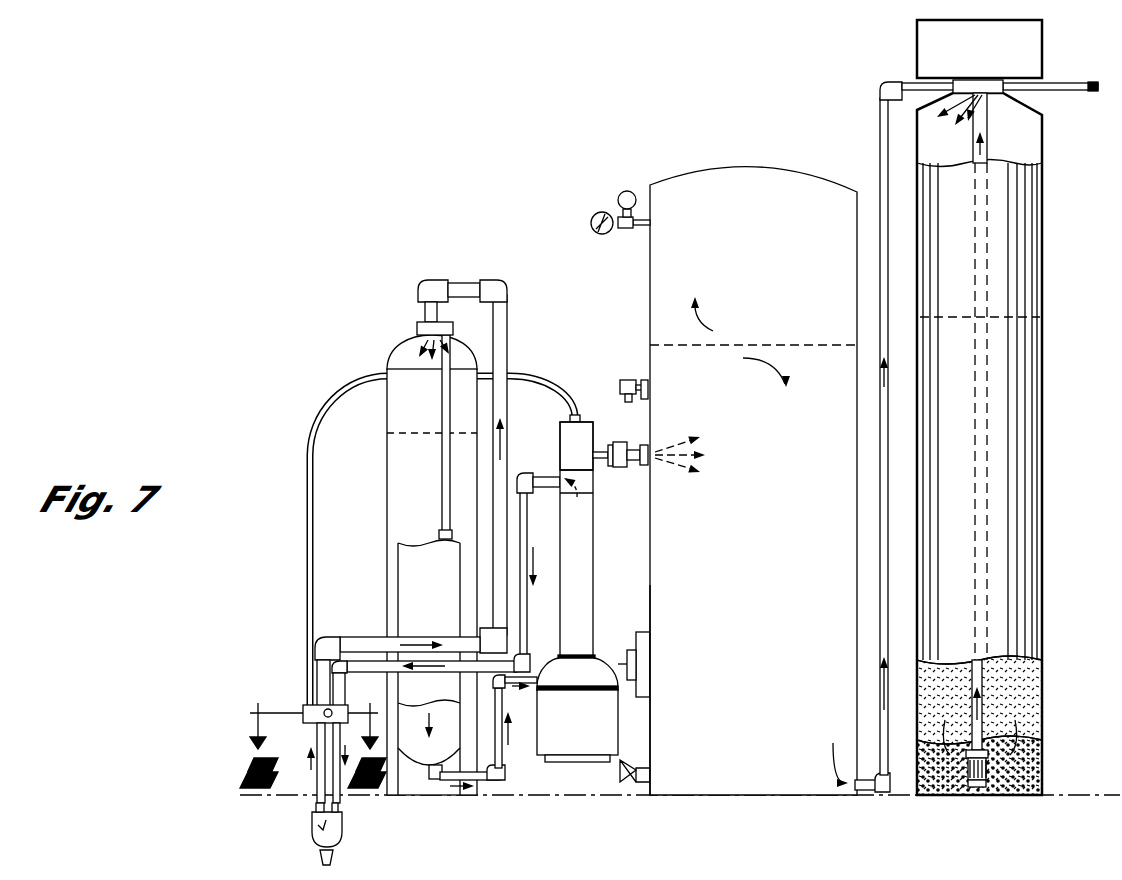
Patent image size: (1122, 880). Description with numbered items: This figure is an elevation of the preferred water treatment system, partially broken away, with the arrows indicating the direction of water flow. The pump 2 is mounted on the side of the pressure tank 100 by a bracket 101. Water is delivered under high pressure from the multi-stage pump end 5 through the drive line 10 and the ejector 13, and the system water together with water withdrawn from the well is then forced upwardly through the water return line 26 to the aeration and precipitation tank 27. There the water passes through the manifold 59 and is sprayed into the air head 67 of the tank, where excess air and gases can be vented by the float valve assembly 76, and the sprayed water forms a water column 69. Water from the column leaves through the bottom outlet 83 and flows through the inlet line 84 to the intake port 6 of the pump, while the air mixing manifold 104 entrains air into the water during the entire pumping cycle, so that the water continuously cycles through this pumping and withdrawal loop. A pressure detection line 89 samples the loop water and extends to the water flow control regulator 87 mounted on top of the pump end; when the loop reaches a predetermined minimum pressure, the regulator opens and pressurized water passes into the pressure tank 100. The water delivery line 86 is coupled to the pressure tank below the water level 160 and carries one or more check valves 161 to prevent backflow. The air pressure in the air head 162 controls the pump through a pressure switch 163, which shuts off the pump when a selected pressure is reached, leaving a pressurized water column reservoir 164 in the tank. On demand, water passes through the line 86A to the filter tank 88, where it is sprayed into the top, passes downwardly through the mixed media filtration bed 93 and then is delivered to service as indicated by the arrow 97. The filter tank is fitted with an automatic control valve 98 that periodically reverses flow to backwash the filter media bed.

The pump 2 is at (583, 743).
The multi-stage pump end 5 is at (594, 541).
The intake port 6 is at (538, 677).
The drive line 10 is at (522, 525).
The ejector 13 is at (350, 830).
The water return line 26 is at (372, 637).
The aeration and precipitation tank 27 is at (405, 368).
The manifold 59 is at (423, 322).
The air head 67 is at (438, 565).
The water column 69 is at (403, 467).
The float valve assembly 76 is at (455, 430).
The bottom outlet 83 is at (432, 780).
The inlet line 84 is at (500, 750).
The water delivery line 86 is at (612, 460).
The line 86A is at (884, 120).
The water flow control regulator 87 is at (583, 435).
The filter tank 88 is at (1001, 437).
The pressure detection line 89 is at (311, 417).
The filtration bed 93 is at (1013, 700).
The arrow 97 is at (1078, 82).
The automatic control valve 98 is at (930, 34).
The pressure tank 100 is at (662, 590).
The bracket 101 is at (628, 663).
The air mixing manifold 104 is at (305, 725).
The water level 160 is at (680, 345).
The check valves 161 is at (625, 443).
The air head 162 is at (705, 183).
The pressure switch 163 is at (615, 203).
The water column reservoir 164 is at (759, 542).